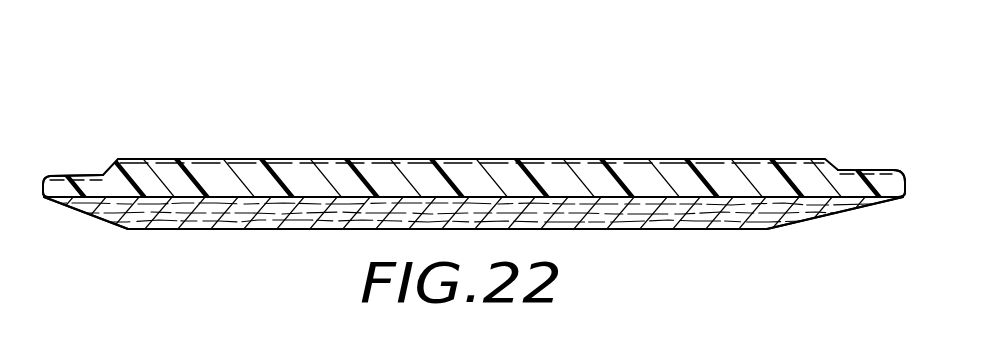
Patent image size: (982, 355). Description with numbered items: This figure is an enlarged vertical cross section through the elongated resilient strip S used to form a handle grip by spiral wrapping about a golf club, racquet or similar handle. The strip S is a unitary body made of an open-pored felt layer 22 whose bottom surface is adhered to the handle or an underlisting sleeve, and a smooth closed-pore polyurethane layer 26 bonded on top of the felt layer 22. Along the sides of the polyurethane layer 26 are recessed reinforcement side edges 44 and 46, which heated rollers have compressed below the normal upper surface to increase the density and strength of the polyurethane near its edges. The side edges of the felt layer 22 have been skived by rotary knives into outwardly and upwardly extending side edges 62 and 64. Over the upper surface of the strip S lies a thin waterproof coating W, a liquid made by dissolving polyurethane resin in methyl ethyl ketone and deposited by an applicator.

The resilient strip S is at (534, 158).
The waterproof coating W is at (343, 158).
The felt layer 22 is at (660, 213).
The polyurethane layer 26 is at (707, 170).
The reinforcement side edge 44 is at (86, 176).
The reinforcement side edge 46 is at (864, 170).
The skived side edge 62 is at (93, 214).
The skived side edge 64 is at (822, 215).